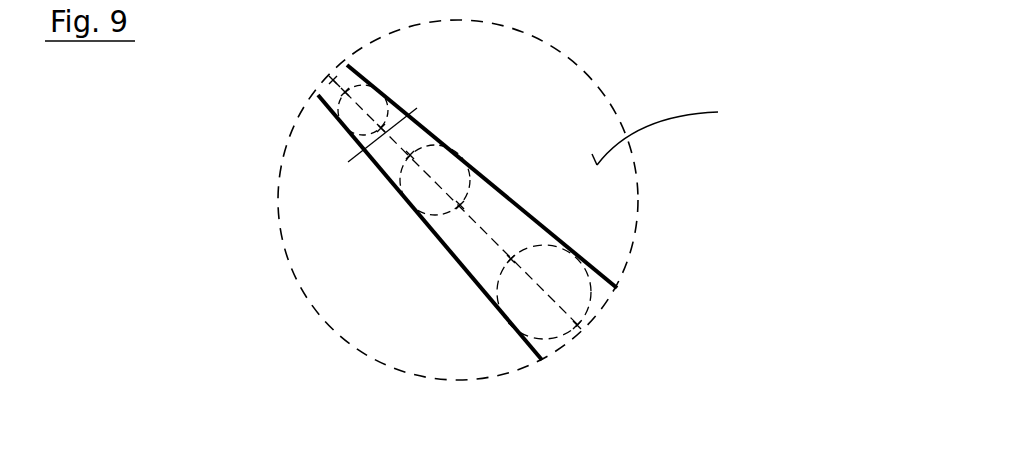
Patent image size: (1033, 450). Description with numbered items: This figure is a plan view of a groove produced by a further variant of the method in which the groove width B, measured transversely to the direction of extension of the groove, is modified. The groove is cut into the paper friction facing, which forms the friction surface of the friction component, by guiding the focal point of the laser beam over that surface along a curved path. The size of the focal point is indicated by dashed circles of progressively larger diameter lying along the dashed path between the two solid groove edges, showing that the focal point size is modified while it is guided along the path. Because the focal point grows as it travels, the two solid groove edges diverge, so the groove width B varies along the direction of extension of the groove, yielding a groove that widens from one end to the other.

The groove width B is at (391, 127).